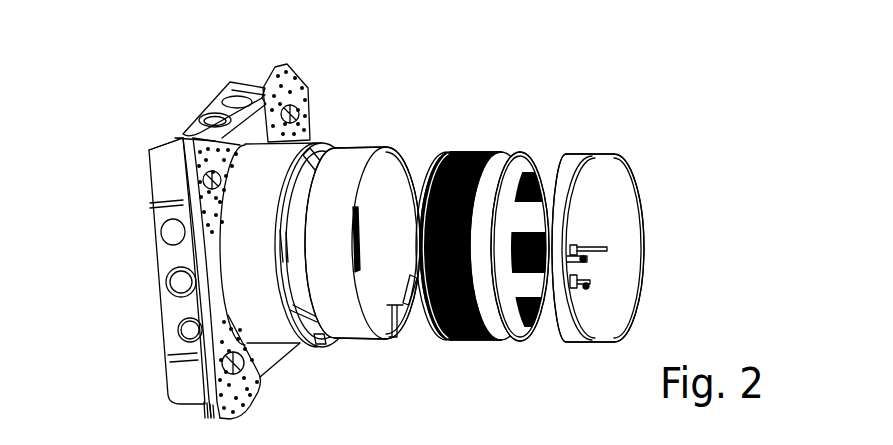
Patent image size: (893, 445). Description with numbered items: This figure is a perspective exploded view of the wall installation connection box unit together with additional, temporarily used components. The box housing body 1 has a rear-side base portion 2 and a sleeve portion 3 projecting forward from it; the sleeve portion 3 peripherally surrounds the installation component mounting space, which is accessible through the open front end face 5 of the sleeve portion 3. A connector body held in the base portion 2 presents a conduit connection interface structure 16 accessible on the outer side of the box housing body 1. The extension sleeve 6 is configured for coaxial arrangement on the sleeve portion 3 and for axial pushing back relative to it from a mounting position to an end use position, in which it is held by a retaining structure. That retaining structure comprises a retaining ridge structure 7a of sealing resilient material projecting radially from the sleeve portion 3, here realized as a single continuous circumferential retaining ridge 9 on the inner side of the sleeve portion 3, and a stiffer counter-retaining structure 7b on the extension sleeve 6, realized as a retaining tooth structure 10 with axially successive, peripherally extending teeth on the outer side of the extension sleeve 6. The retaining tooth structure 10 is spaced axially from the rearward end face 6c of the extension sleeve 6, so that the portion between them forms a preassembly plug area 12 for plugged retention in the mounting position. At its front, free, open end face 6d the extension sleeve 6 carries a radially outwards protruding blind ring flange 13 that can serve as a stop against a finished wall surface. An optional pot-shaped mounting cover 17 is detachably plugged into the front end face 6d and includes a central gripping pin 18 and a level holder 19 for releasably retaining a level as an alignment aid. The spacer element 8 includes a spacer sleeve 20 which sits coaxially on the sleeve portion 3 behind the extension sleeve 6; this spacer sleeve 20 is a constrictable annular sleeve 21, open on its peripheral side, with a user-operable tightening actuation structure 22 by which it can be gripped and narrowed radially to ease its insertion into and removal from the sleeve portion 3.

The box housing body 1 is at (200, 400).
The base portion 2 is at (163, 158).
The sleeve portion 3 is at (280, 333).
The open front end face 5 is at (320, 342).
The extension sleeve 6 is at (468, 338).
The rearward end face 6c is at (437, 175).
The front, free, open end face 6d is at (510, 330).
The retaining ridge structure 7a is at (360, 158).
The counter-retaining structure 7b is at (487, 165).
The spacer element 8 is at (378, 158).
The retaining ridge 9 is at (318, 158).
The retaining tooth structure 10 is at (445, 338).
The preassembly plug area 12 is at (450, 158).
The blind ring flange 13 is at (545, 156).
The conduit connection interface structure 16 is at (199, 120).
The mounting cover 17 is at (213, 122).
The gripping pin 18 is at (594, 247).
The level holder 19 is at (590, 277).
The spacer sleeve 20 is at (398, 152).
The constrictable annular sleeve 21 is at (352, 330).
The tightening actuation structure 22 is at (415, 290).